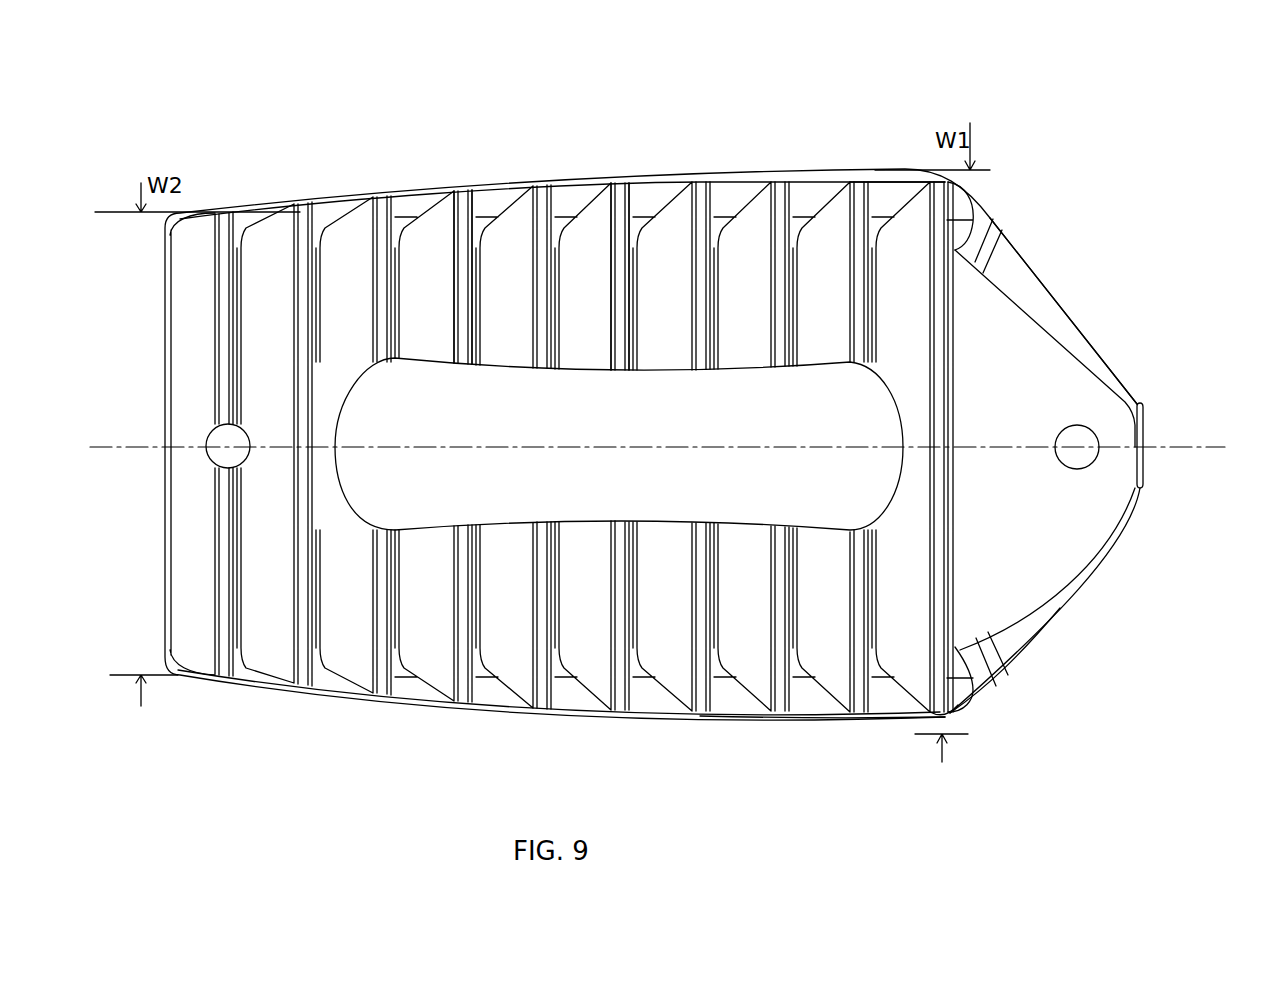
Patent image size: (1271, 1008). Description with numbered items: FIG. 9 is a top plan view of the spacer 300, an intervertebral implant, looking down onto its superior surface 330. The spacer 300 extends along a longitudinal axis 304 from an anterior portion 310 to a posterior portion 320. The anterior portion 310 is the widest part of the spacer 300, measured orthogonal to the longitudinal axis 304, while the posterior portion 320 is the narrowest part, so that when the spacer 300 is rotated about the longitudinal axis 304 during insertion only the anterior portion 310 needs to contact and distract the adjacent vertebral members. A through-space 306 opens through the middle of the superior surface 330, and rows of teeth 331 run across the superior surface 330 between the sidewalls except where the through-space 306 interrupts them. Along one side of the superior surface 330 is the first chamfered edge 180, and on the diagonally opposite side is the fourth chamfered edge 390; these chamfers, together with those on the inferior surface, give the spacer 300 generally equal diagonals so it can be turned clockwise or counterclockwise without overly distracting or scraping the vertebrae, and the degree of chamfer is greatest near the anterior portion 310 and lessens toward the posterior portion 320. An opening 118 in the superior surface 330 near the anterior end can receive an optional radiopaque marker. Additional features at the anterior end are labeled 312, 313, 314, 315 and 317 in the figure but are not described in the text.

The spacer 300 is at (1017, 201).
The through-space 306 is at (631, 432).
The posterior portion 320 is at (182, 542).
The opening 118 is at (1080, 432).
The teeth 331 is at (458, 208).
The superior surface 330 is at (645, 195).
The fourth chamfered edge 390 is at (885, 175).
The side wall inner surface 315 is at (990, 340).
The tapered side wall 314 is at (1060, 298).
The leading end tip 317 is at (1145, 445).
The longitudinal axis 304 is at (1200, 450).
The lower tapered side wall inner edge 312 is at (1022, 633).
The lower tapered side wall 313 is at (1070, 582).
The anterior portion 310 is at (950, 716).
The first chamfered edge 180 is at (847, 718).